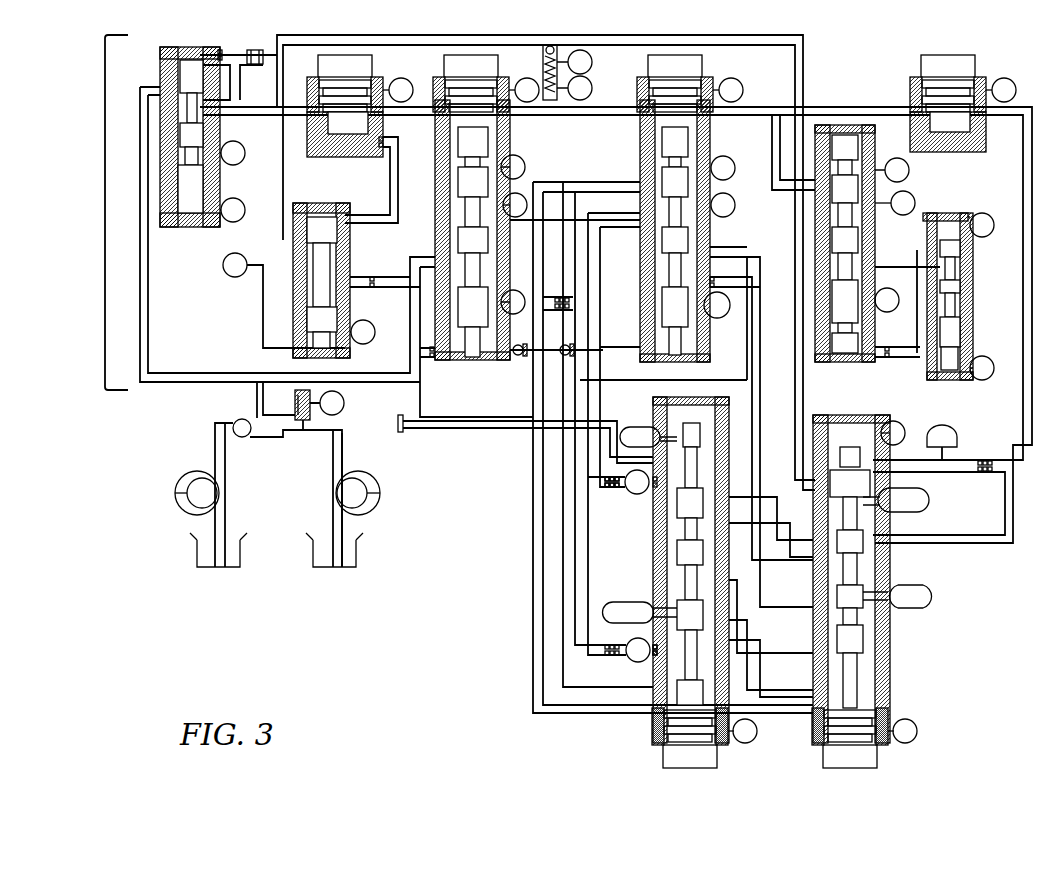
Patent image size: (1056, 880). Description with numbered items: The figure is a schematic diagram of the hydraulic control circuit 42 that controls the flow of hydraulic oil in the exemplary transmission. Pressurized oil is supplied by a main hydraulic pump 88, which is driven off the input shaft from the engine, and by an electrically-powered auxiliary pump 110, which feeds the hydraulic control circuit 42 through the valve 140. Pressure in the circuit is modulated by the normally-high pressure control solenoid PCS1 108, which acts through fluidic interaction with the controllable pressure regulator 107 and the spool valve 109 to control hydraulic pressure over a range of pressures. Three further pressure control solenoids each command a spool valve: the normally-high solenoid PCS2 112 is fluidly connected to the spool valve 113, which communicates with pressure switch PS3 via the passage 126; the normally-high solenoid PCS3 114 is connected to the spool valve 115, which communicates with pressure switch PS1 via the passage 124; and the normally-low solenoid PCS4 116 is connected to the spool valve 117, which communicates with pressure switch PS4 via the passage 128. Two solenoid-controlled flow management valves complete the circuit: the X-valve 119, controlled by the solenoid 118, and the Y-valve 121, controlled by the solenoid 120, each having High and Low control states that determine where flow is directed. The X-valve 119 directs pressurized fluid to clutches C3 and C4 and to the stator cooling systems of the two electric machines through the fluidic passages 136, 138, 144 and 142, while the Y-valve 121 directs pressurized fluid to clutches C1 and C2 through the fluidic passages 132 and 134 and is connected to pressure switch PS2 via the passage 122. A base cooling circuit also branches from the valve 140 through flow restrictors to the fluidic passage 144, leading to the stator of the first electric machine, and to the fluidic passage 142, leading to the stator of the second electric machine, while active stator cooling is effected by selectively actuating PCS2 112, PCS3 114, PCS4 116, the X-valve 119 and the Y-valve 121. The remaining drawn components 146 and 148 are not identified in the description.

The hydraulic control circuit 42 is at (103, 107).
The main hydraulic pump 88 is at (362, 512).
The controllable pressure regulator 107 is at (190, 205).
The pressure control solenoid PCS1 108 is at (330, 58).
The spool valve 109 is at (330, 228).
The auxiliary pump 110 is at (193, 512).
The pressure control solenoid PCS2 112 is at (925, 57).
The spool valve 113 is at (850, 238).
The pressure control solenoid PCS3 114 is at (658, 58).
The spool valve 115 is at (660, 153).
The pressure control solenoid PCS4 116 is at (456, 58).
The spool valve 117 is at (472, 182).
The solenoid 118 is at (677, 760).
The X-valve 119 is at (682, 547).
The solenoid 120 is at (827, 760).
The Y-valve 121 is at (856, 640).
The passage 122 is at (942, 436).
The passage 124 is at (725, 201).
The passage 126 is at (905, 200).
The passage 128 is at (526, 197).
The fluidic passage 132 is at (930, 597).
The fluidic passage 134 is at (920, 492).
The fluidic passage 136 is at (630, 602).
The fluidic passage 138 is at (636, 435).
The valve 140 is at (237, 424).
The fluidic passage 142 is at (637, 662).
The fluidic passage 144 is at (632, 495).
The orifice 146 is at (608, 490).
The check valve 148 is at (603, 672).